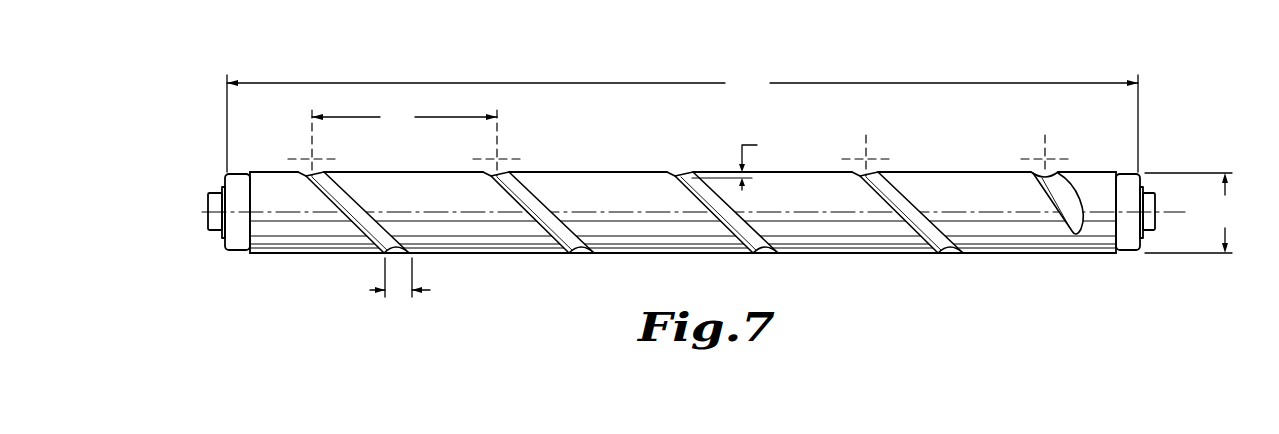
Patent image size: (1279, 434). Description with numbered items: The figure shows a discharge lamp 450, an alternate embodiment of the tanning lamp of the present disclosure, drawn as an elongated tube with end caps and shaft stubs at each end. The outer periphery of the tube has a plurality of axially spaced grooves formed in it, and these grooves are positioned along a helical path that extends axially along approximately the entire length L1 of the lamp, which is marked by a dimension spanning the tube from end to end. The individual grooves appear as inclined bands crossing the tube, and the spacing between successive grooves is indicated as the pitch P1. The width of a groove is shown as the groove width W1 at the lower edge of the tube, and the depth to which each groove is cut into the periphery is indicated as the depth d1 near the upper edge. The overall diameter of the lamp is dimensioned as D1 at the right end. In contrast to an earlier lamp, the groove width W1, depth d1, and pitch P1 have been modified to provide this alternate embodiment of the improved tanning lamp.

The discharge lamp 450 is at (1172, 139).
The length of the lamp L1 is at (682, 120).
The pitch P1 is at (404, 118).
The depth d1 is at (762, 160).
The groove width W1 is at (416, 283).
The roller diameter dimension D1 is at (1197, 213).